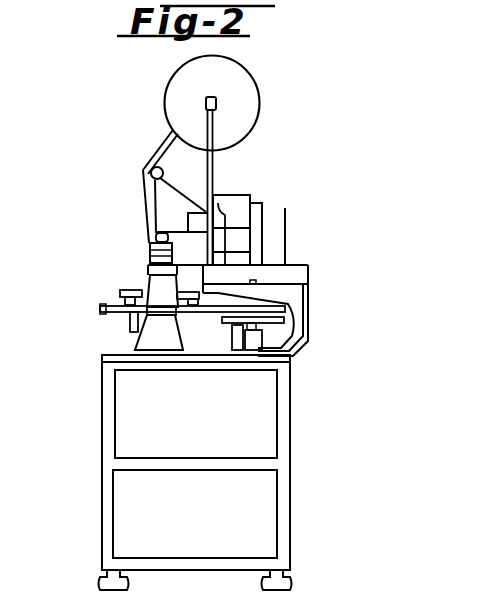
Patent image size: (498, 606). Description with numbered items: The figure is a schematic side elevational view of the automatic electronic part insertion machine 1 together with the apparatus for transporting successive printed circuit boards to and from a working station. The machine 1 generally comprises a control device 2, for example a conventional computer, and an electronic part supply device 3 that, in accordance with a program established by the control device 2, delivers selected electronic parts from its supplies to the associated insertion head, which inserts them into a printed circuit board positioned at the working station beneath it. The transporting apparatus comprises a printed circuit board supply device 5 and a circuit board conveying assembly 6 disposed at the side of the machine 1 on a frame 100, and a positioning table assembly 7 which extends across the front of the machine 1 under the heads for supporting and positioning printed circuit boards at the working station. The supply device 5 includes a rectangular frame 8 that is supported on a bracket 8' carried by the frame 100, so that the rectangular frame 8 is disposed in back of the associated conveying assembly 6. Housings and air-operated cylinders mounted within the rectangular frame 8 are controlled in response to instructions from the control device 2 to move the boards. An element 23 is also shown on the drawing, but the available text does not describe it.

The automatic electronic part insertion machine 1 is at (262, 130).
The control device 2 is at (240, 193).
The electronic part supply device 3 is at (146, 142).
The printed circuit board supply device 5 is at (296, 248).
The circuit board conveying assembly 6 is at (140, 279).
The positioning table assembly 7 is at (128, 325).
The rectangular frame 8 is at (277, 312).
The bracket 8' is at (327, 323).
The wall plate 23 is at (286, 207).
The frame 100 is at (110, 404).